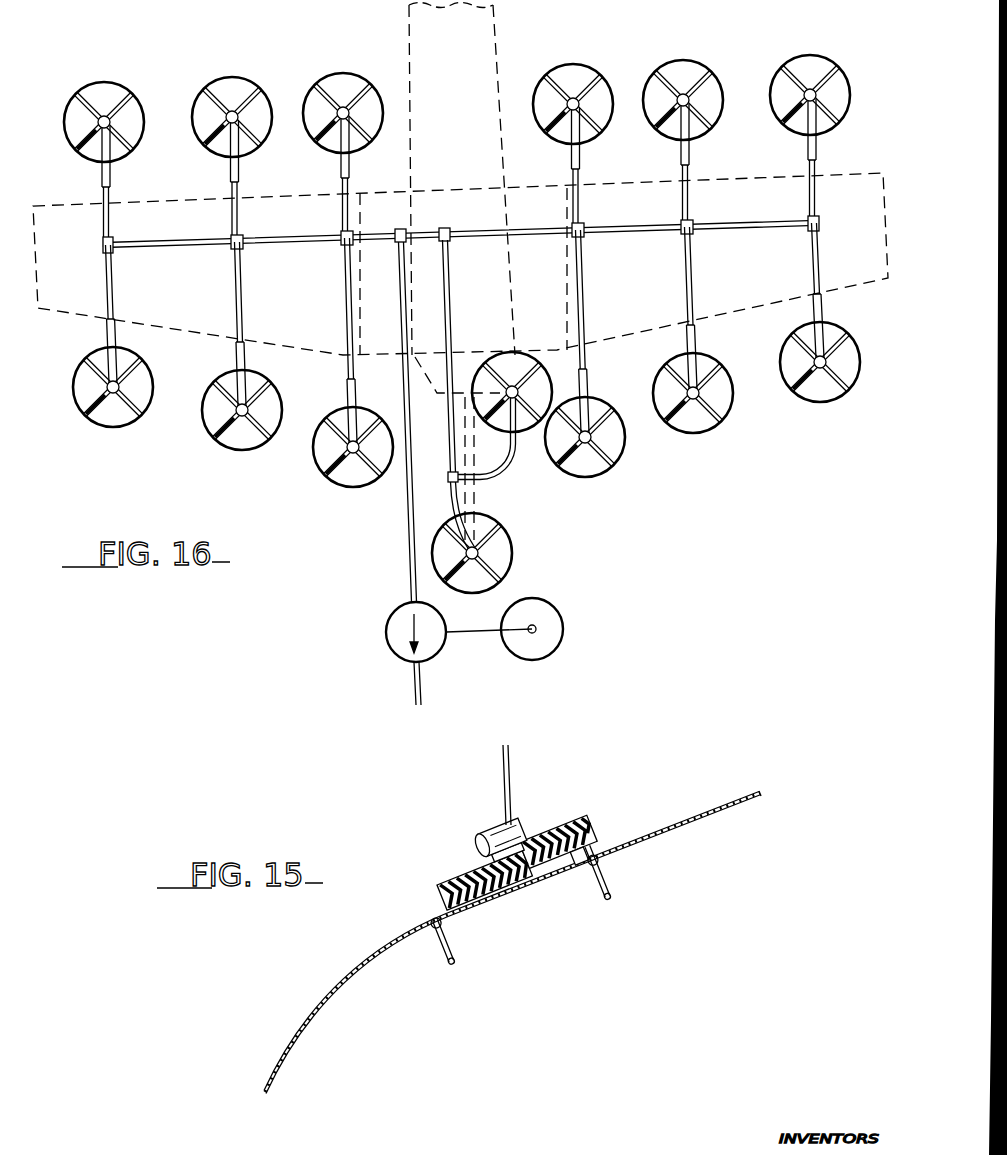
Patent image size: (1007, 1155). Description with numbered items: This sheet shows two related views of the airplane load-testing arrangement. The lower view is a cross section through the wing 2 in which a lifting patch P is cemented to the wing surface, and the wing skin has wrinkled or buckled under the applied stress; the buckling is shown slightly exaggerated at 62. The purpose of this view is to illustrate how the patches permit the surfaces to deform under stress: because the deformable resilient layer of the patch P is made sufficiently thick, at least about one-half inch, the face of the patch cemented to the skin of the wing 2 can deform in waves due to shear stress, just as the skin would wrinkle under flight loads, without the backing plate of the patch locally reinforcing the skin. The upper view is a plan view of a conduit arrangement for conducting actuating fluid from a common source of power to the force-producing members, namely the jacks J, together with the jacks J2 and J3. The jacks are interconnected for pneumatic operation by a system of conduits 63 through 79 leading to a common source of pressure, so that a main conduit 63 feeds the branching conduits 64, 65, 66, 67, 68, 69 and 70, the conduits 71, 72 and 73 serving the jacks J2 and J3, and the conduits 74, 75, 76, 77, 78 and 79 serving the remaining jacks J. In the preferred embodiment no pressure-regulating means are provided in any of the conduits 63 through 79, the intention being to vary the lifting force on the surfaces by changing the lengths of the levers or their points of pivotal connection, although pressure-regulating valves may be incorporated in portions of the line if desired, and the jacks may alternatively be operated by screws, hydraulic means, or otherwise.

In FIG. 15, the wing 2 is at (663, 822).
In FIG. 15, the buckling 62 is at (516, 892).
In FIG. 16, the conduit 63 is at (417, 509).
In FIG. 16, the conduit 64 is at (414, 232).
In FIG. 16, the conduit 65 is at (351, 222).
In FIG. 16, the conduit 66 is at (250, 213).
In FIG. 16, the conduit 67 is at (111, 227).
In FIG. 16, the conduit 68 is at (126, 287).
In FIG. 16, the conduit 69 is at (252, 288).
In FIG. 16, the conduit 70 is at (350, 333).
In FIG. 16, the conduit 71 is at (455, 300).
In FIG. 16, the conduit 72 is at (515, 455).
In FIG. 16, the conduit 73 is at (458, 497).
In FIG. 16, the conduit 74 is at (588, 312).
In FIG. 16, the conduit 75 is at (696, 301).
In FIG. 16, the conduit 76 is at (822, 272).
In FIG. 16, the conduit 77 is at (820, 203).
In FIG. 16, the conduit 78 is at (704, 192).
In FIG. 16, the conduit 79 is at (585, 210).
In FIG. 16, the jack J is at (131, 110).
In FIG. 16, the jack J2 is at (504, 555).
In FIG. 16, the jack J3 is at (527, 368).
In FIG. 15, the lifting patch P is at (571, 823).